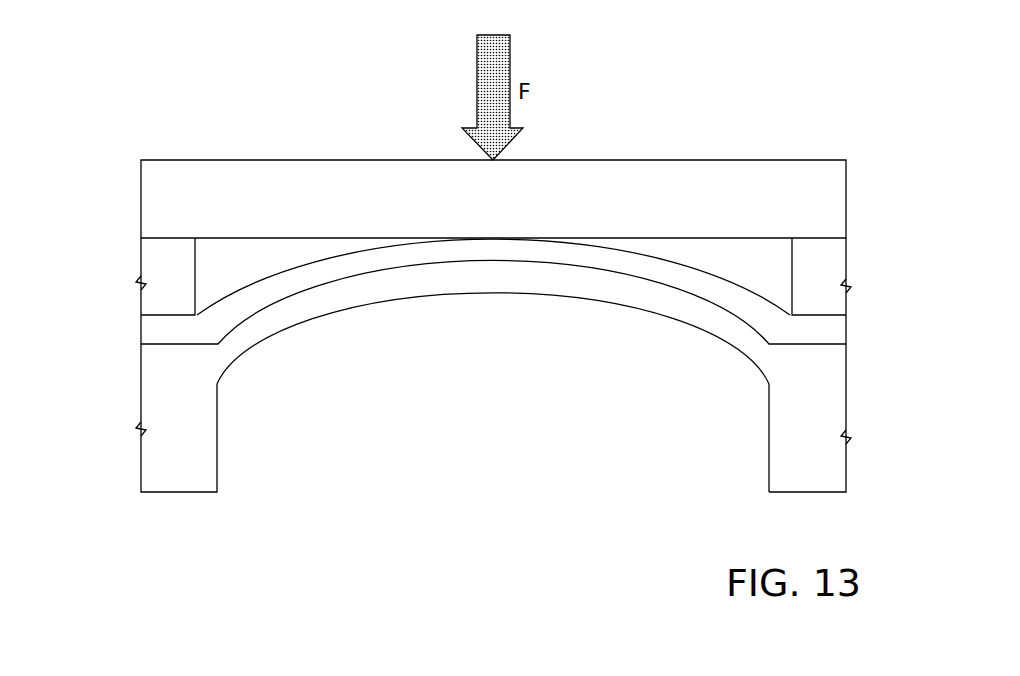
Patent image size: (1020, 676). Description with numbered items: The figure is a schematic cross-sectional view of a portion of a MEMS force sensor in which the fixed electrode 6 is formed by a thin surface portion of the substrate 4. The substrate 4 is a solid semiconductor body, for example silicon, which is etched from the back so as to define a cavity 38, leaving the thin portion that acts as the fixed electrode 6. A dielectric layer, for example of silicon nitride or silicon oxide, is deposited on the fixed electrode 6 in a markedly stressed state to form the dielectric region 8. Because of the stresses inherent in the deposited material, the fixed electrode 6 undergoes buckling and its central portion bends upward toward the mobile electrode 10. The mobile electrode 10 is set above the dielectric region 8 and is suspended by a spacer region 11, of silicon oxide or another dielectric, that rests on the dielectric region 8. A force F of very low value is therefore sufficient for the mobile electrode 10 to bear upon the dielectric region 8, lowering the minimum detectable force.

The mobile electrode 10 is at (793, 174).
The spacer region 11 is at (152, 256).
The dielectric region 8 is at (833, 333).
The fixed electrode 6 is at (658, 303).
The cavity 38 is at (762, 443).
The substrate 4 is at (828, 458).